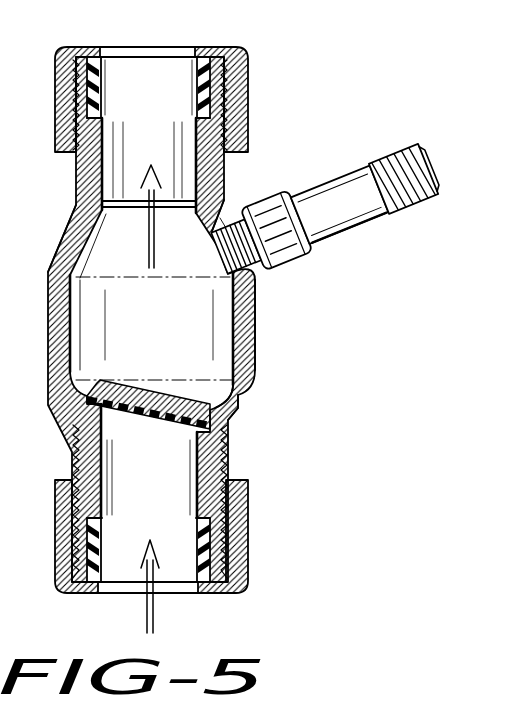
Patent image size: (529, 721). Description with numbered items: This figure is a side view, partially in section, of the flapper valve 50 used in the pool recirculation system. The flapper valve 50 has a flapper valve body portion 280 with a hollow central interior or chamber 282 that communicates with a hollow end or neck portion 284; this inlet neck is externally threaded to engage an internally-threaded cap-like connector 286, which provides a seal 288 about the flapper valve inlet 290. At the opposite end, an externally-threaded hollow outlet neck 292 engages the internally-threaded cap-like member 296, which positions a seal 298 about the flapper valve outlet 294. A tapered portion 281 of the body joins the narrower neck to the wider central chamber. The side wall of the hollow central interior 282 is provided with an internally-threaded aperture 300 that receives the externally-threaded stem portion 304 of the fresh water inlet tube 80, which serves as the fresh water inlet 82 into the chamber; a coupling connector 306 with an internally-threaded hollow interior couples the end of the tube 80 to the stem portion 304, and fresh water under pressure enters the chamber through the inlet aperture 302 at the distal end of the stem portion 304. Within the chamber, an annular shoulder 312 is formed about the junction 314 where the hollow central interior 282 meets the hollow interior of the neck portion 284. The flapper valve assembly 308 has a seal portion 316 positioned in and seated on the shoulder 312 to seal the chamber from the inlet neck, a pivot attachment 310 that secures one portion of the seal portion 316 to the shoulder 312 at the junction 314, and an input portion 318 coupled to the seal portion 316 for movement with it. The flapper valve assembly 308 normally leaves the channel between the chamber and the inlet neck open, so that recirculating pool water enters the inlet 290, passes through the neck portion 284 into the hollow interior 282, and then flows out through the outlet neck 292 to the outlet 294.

The flapper valve 50 is at (234, 322).
The fresh water inlet tube 80 is at (373, 218).
The fresh water inlet 82 is at (294, 232).
The flapper valve body portion 280 is at (272, 323).
The tapered shoulder 281 is at (60, 245).
The hollow central interior 282 is at (218, 367).
The hollow end or neck portion 284 is at (240, 513).
The cap-like connector 286 is at (231, 594).
The seal 288 is at (197, 557).
The flapper valve inlet 290 is at (141, 599).
The outlet neck 292 is at (76, 127).
The flapper valve outlet 294 is at (156, 36).
The cap-like member 296 is at (241, 47).
The seal 298 is at (89, 78).
The internally-threaded aperture 300 is at (337, 229).
The inlet aperture 302 is at (214, 261).
The threaded stem portion 304 is at (232, 220).
The coupling connector 306 is at (293, 250).
The flapper valve assembly 308 is at (157, 358).
The pivot attachment 310 is at (237, 404).
The annular shoulder 312 is at (226, 438).
The junction 314 is at (186, 436).
The seal portion 316 is at (148, 403).
The input portion 318 is at (156, 388).